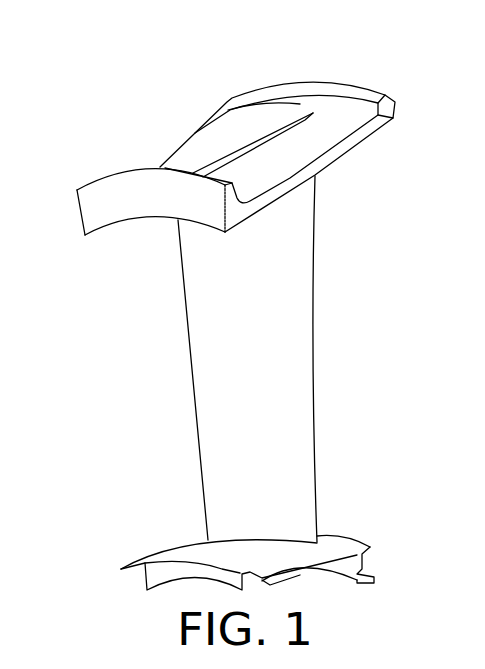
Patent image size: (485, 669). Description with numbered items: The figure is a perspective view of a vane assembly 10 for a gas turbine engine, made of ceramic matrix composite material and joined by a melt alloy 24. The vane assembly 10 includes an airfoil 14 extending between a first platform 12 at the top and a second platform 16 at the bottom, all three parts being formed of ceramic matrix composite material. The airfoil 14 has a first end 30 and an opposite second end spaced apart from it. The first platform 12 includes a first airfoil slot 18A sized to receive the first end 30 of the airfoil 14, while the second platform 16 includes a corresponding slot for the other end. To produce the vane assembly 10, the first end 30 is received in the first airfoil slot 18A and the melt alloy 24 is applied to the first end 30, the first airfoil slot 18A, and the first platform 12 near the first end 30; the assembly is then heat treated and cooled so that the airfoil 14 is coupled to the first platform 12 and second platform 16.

The vane assembly 10 is at (133, 100).
The first platform 12 is at (360, 84).
The airfoil 14 is at (202, 308).
The second platform 16 is at (140, 560).
The first airfoil slot 18A is at (282, 123).
The melt alloy 24 is at (221, 158).
The first end 30 is at (250, 137).